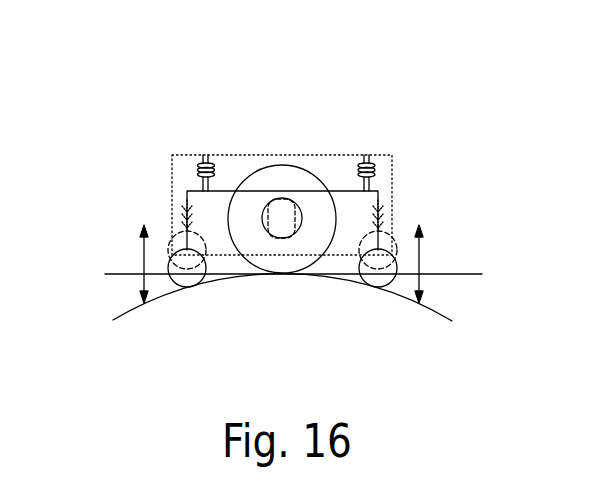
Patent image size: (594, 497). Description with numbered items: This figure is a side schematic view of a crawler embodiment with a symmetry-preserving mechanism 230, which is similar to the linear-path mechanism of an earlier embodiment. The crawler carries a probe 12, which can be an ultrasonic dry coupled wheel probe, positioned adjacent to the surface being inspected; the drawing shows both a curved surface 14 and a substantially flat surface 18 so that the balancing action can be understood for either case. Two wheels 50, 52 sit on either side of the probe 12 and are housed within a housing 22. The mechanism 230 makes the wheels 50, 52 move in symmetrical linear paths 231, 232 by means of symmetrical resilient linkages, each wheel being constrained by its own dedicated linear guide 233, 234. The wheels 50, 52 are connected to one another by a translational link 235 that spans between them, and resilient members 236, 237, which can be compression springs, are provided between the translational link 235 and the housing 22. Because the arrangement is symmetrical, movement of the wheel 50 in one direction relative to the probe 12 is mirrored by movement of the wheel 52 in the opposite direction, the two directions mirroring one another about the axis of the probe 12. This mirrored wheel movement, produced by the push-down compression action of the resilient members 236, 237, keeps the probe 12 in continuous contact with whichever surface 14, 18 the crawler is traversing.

The mechanism 230 is at (517, 77).
The housing 22 is at (393, 178).
The probe 12 is at (303, 170).
The translational link 235 is at (273, 167).
The resilient member 237 is at (200, 160).
The resilient member 236 is at (372, 160).
The linear guide 234 is at (185, 200).
The linear guide 233 is at (388, 216).
The wheel 52 is at (170, 289).
The wheel 50 is at (357, 284).
The flat surface 18 is at (118, 273).
The curved surface 14 is at (127, 315).
The linear path 232 is at (205, 274).
The linear path 231 is at (425, 262).